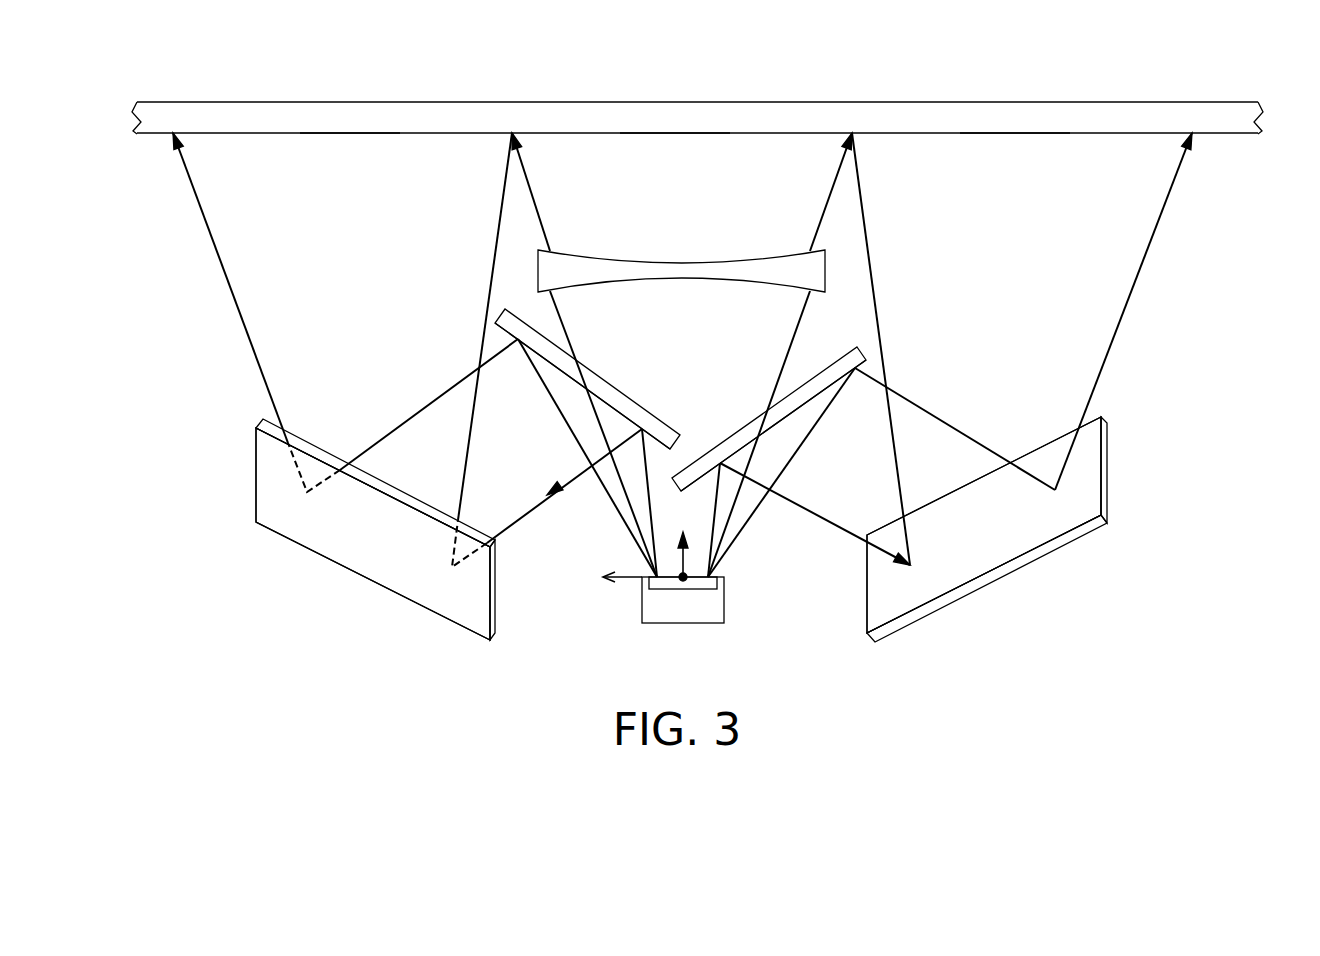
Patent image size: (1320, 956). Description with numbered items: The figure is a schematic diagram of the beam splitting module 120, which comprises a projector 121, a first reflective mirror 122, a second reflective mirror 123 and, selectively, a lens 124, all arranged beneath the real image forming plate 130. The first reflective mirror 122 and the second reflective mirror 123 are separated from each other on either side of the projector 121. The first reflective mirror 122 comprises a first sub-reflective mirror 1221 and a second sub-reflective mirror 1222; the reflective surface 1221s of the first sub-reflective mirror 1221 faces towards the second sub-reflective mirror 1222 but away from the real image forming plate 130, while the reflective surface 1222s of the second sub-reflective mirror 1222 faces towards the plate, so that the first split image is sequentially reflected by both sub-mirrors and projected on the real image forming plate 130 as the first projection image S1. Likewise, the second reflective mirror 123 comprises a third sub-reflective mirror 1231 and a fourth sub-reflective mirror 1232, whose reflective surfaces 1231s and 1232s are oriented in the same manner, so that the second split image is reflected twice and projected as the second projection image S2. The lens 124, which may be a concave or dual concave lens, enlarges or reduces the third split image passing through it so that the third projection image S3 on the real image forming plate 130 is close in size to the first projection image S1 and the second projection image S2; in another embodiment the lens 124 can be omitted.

The beam splitting module 120 is at (1158, 338).
The projector 121 is at (678, 608).
The first reflective mirror 122 is at (308, 309).
The first sub-reflective mirror 1221 is at (503, 328).
The reflective surface of the first sub-reflective mirror 1221s is at (585, 388).
The second sub-reflective mirror 1222 is at (322, 455).
The reflective surface of the second sub-reflective mirror 1222s is at (498, 597).
The second reflective mirror 123 is at (1040, 309).
The third sub-reflective mirror 1231 is at (858, 362).
The reflective surface of the third sub-reflective mirror 1231s is at (798, 408).
The fourth sub-reflective mirror 1232 is at (1045, 462).
The reflective surface of the fourth sub-reflective mirror 1232s is at (880, 597).
The lens 124 is at (680, 272).
The real image forming plate 130 is at (793, 120).
The first projection image S1 is at (357, 138).
The second projection image S2 is at (1026, 138).
The third projection image S3 is at (685, 138).